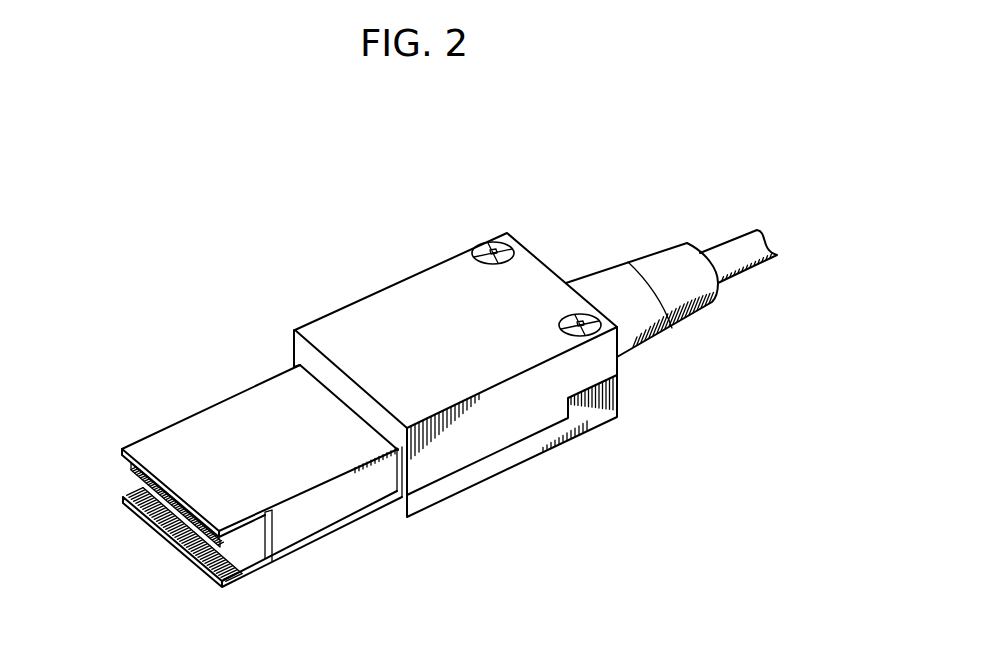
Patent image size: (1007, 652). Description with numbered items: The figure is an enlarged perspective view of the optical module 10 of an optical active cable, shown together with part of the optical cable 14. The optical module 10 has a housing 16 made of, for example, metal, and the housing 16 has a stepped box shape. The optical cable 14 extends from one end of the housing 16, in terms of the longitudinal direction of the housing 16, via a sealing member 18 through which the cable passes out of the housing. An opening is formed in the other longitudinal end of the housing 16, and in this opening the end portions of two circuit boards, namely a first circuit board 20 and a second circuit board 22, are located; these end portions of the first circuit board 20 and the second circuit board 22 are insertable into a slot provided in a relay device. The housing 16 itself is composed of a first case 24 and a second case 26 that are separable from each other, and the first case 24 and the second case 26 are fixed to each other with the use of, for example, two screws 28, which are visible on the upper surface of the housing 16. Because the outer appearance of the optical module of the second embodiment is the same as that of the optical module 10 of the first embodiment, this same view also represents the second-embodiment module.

The optical module 10 is at (507, 197).
The optical cable 14 is at (727, 242).
The housing 16 is at (408, 275).
The sealing member 18 is at (616, 262).
The first circuit board 20 is at (125, 463).
The second circuit board 22 is at (125, 495).
The first case 24 is at (340, 308).
The second case 26 is at (617, 428).
The screws 28 is at (488, 242).